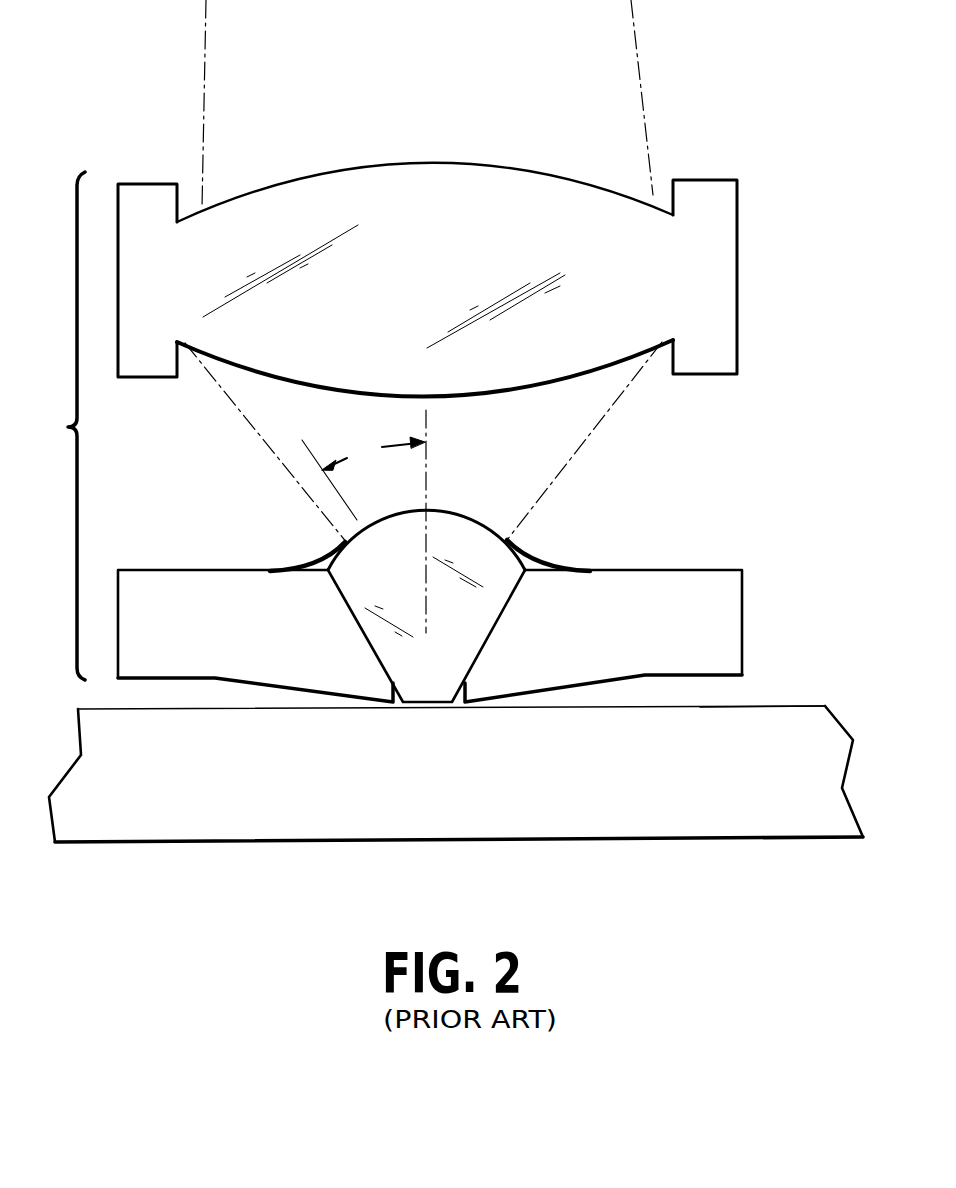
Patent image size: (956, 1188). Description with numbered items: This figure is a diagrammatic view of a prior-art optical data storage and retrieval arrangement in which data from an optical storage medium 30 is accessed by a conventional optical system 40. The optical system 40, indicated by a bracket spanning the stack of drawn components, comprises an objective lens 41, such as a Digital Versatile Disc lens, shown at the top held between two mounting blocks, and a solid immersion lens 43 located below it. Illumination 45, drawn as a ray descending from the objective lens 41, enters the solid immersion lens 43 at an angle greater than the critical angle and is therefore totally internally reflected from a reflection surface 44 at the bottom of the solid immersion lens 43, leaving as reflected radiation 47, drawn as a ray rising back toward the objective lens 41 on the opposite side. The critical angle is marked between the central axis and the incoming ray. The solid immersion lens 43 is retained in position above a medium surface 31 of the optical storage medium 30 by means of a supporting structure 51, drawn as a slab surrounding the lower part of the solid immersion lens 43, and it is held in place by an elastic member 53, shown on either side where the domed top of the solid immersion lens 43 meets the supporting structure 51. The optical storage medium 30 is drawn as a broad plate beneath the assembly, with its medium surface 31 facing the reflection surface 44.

The optical storage medium 30 is at (592, 840).
The medium surface 31 is at (800, 705).
The optical system 40 is at (417, 384).
The objective lens 41 is at (737, 347).
The solid immersion lens 43 is at (470, 515).
The reflection surface 44 is at (430, 703).
The illumination 45 is at (244, 411).
The reflected radiation 47 is at (599, 427).
The supporting structure 51 is at (718, 570).
The elastic member 53 is at (300, 567).